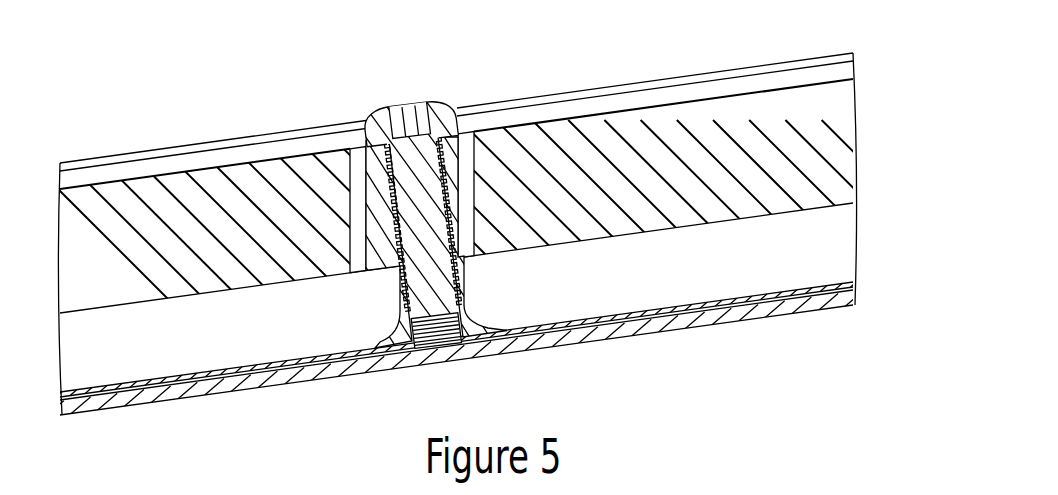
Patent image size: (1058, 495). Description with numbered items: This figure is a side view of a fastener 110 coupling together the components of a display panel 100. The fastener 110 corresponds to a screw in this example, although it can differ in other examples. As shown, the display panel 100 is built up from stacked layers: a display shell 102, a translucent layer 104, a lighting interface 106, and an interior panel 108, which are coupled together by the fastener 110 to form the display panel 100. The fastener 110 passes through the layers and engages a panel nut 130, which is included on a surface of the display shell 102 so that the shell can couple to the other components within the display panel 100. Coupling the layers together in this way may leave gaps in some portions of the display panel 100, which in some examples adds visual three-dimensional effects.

The display panel 100 is at (130, 95).
The display shell 102 is at (795, 307).
The translucent layer 104 is at (833, 250).
The lighting interface 106 is at (820, 202).
The interior panel 108 is at (855, 95).
The fastener 110 is at (433, 88).
The panel nut 130 is at (490, 303).